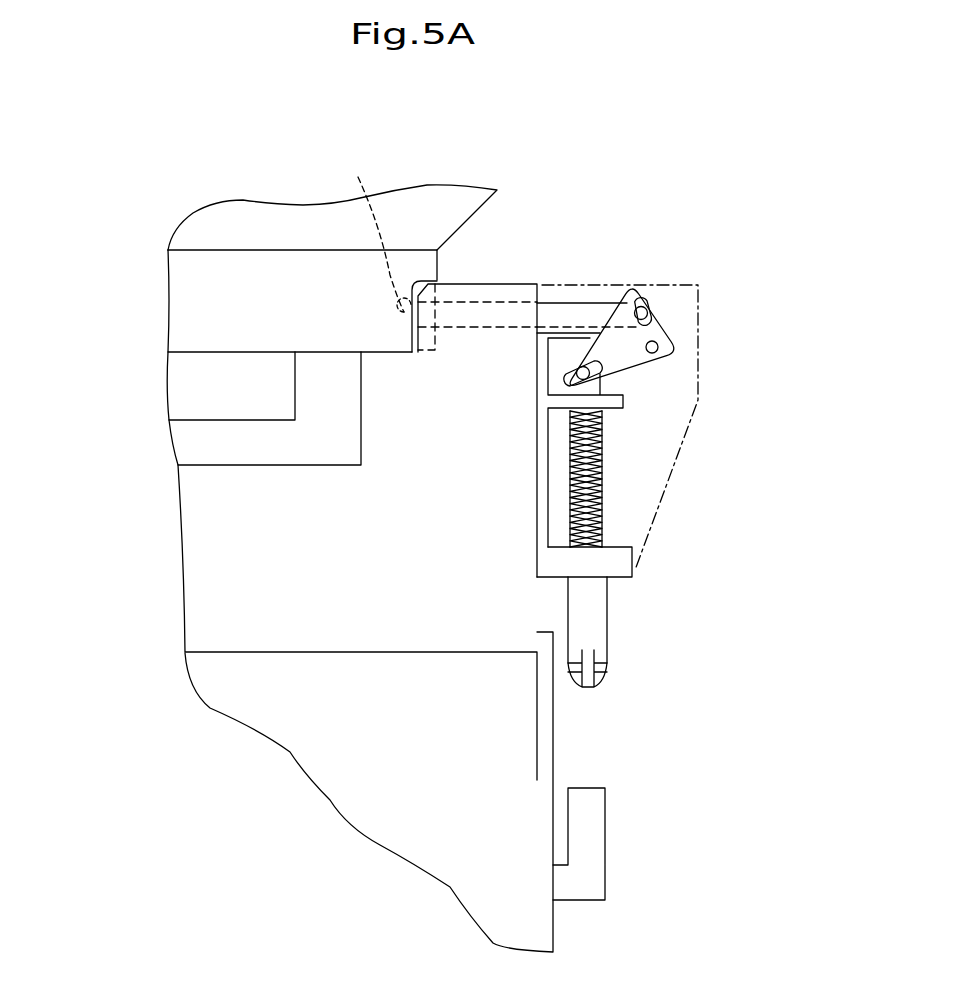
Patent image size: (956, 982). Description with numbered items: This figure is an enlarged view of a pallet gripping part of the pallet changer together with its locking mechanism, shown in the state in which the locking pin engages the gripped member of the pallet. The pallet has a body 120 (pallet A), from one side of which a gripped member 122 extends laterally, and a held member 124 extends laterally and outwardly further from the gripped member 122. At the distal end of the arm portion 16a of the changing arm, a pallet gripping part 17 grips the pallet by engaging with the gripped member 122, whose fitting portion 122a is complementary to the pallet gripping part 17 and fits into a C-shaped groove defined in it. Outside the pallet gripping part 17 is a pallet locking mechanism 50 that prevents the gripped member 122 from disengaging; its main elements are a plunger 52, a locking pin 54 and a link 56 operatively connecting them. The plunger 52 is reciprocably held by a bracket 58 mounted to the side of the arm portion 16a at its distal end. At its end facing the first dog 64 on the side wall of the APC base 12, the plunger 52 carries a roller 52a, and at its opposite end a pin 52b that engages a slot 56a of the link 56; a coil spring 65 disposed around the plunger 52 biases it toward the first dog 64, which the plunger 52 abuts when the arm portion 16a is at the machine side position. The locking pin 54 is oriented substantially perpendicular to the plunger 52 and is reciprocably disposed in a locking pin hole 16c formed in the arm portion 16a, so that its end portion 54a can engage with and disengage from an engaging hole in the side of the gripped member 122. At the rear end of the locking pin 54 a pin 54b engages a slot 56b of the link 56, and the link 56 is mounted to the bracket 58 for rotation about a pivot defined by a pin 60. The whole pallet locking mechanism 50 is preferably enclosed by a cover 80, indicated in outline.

The APC base 12 is at (332, 762).
The arm portion 16a is at (195, 556).
The locking pin hole 16c is at (476, 322).
The pallet gripping part 17 is at (492, 288).
The pallet locking mechanism 50 is at (737, 254).
The plunger 52 is at (595, 620).
The roller 52a is at (586, 692).
The pin 52b is at (576, 370).
The locking pin 54 is at (580, 300).
The end portion 54a is at (371, 227).
The pin 54b is at (652, 322).
The link 56 is at (627, 360).
The slot 56a is at (590, 402).
The slot 56b is at (646, 303).
The bracket 58 is at (613, 568).
The pin 60 is at (658, 352).
The first dog 64 is at (598, 862).
The coil spring 65 is at (575, 493).
The cover 80 is at (685, 367).
The body 120 is at (447, 203).
The gripped member 122 is at (192, 300).
The fitting portion 122a is at (412, 280).
The held member 124 is at (192, 390).